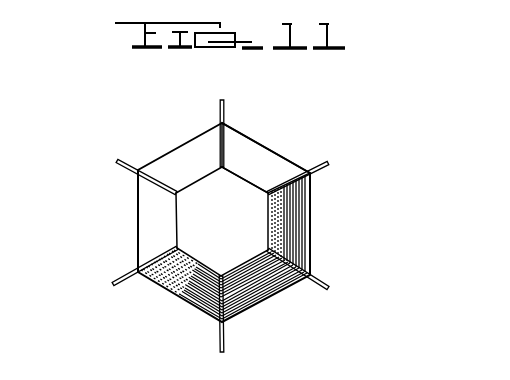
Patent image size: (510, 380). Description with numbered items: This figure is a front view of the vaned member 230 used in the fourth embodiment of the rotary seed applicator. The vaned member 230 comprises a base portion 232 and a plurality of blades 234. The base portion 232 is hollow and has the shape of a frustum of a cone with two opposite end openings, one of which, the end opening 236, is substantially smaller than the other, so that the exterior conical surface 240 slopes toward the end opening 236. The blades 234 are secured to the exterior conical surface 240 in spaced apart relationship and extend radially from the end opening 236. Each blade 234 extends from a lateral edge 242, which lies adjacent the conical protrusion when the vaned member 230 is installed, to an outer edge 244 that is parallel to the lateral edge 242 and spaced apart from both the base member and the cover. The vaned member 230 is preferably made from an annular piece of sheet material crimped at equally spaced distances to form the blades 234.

The vaned member 230 is at (267, 142).
The base portion 232 is at (311, 230).
The blades 234 is at (123, 157).
The end opening 236 is at (198, 181).
The exterior conical surface 240 is at (237, 142).
The lateral edge 242 is at (178, 248).
The edge 244 is at (115, 283).